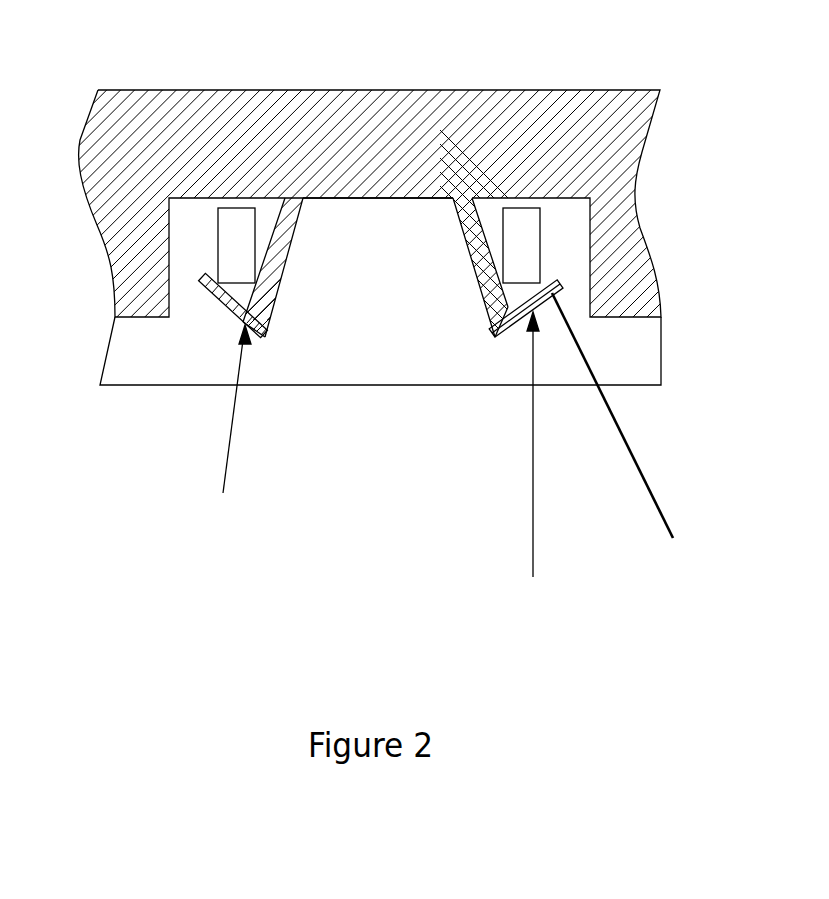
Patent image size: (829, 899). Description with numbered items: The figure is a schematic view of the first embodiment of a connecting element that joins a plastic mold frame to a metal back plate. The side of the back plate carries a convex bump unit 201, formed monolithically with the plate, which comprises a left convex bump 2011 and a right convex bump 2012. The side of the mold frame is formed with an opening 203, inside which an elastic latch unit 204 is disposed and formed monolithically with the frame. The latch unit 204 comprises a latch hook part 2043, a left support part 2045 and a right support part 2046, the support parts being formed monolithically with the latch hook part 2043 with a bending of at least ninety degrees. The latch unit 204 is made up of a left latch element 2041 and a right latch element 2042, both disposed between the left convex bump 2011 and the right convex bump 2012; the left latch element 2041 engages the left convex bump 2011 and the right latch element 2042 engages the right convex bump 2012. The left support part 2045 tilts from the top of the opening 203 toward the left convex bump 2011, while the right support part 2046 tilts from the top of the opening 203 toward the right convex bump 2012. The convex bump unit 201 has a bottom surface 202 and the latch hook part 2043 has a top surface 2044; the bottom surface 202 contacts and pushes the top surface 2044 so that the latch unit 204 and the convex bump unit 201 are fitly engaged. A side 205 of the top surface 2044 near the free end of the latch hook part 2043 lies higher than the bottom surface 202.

The convex bump unit 201 is at (525, 208).
The left convex bump 2011 is at (218, 240).
The right convex bump 2012 is at (535, 230).
The bottom surface 202 is at (267, 330).
The opening 203 is at (378, 198).
The latch unit 204 is at (387, 384).
The left latch element 2041 is at (226, 433).
The right latch element 2042 is at (539, 462).
The latch hook part 2043 is at (543, 303).
The top surface 2044 is at (202, 287).
The left support part 2045 is at (292, 252).
The right support part 2046 is at (472, 270).
The side 205 is at (633, 434).